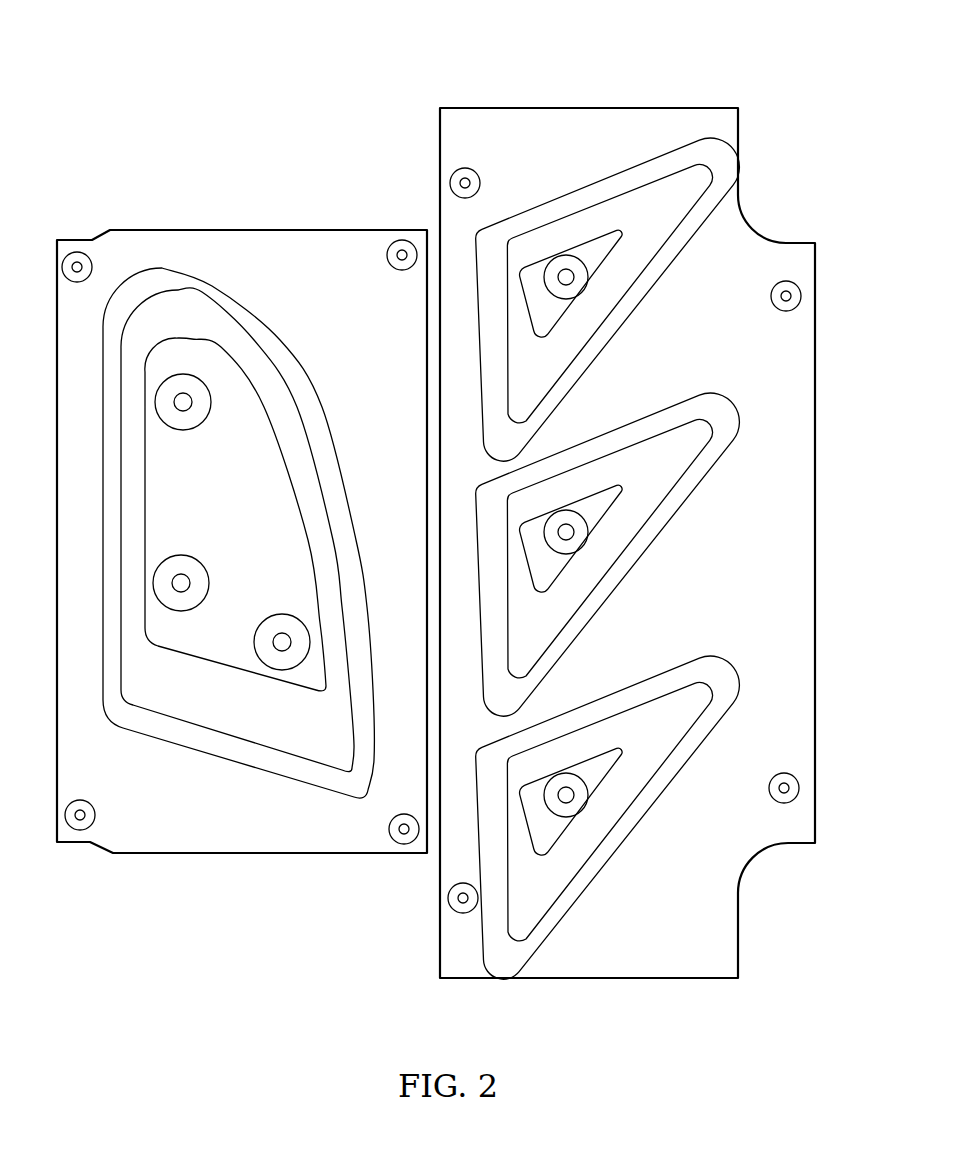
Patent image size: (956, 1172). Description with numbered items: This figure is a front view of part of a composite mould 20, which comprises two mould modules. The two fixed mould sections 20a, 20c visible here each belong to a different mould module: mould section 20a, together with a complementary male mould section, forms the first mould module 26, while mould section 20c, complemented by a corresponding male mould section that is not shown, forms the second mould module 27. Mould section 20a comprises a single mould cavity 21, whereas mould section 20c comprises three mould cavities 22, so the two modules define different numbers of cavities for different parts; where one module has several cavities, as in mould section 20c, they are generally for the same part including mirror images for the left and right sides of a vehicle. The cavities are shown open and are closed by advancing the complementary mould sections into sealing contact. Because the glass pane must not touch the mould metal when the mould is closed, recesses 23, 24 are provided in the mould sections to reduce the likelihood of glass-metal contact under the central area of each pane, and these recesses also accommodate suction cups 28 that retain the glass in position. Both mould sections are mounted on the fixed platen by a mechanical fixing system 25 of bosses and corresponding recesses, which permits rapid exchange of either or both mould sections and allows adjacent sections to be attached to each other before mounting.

The composite mould 20 is at (430, 68).
The mould section 20a is at (265, 253).
The mould section 20c is at (578, 137).
The mould cavity 21 is at (112, 428).
The mould cavities 22 is at (720, 175).
The recess 23 is at (160, 502).
The recess 24 is at (688, 182).
The mechanical fixing system 25 is at (91, 264).
The first mould module 26 is at (207, 172).
The second mould module 27 is at (650, 88).
The suction cups 28 is at (170, 398).